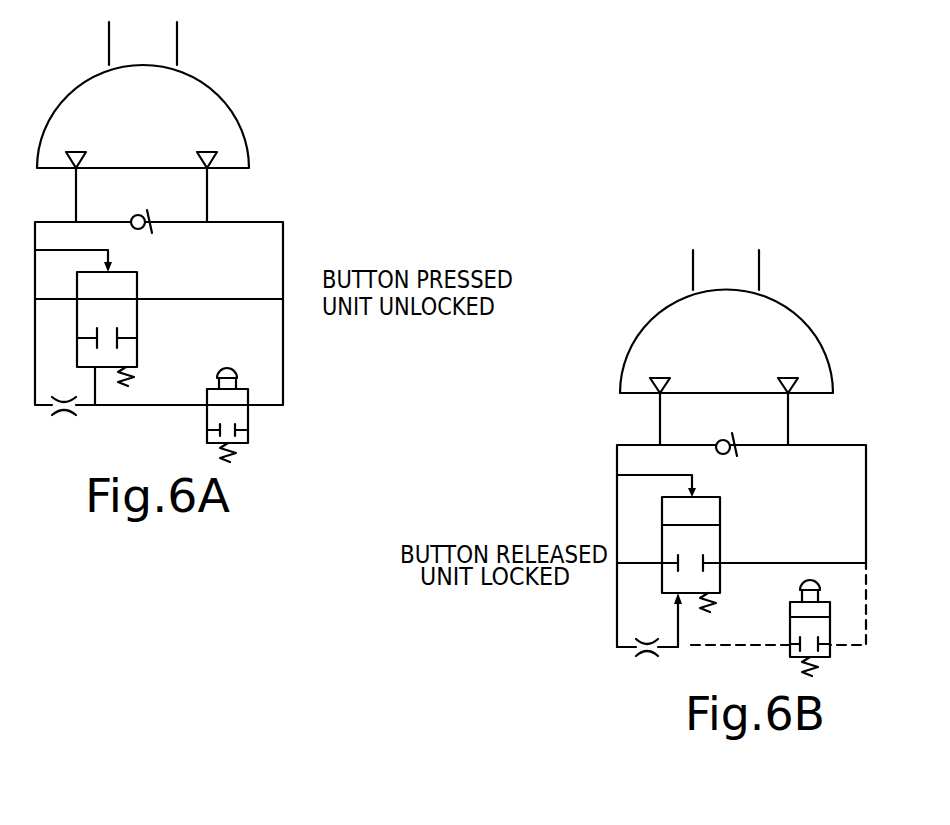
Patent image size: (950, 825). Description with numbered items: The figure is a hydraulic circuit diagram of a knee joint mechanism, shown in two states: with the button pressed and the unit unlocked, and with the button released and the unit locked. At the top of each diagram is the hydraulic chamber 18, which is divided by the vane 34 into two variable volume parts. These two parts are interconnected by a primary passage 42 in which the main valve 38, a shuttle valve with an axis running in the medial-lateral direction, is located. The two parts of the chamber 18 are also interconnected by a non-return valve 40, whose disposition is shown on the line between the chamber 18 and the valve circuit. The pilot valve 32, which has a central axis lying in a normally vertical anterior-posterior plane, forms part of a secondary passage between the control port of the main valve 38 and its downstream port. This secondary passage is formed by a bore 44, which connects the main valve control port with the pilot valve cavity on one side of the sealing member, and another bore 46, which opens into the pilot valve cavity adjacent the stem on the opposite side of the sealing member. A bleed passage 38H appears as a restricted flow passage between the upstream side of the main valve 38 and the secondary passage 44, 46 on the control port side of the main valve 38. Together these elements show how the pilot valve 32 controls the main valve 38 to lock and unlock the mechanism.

In FIG. 6A, the vane 34 is at (191, 95).
In FIG. 6B, the vane 34 is at (748, 313).
In FIG. 6A, the hydraulic chamber 18 is at (241, 93).
In FIG. 6B, the hydraulic chamber 18 is at (805, 308).
In FIG. 6A, the non-return valve 40 is at (154, 213).
In FIG. 6B, the non-return valve 40 is at (736, 433).
In FIG. 6A, the main valve 38 is at (120, 320).
In FIG. 6B, the main valve 38 is at (706, 566).
In FIG. 6A, the bleed passage 38H is at (67, 421).
In FIG. 6B, the bleed passage 38H is at (653, 662).
In FIG. 6A, the primary passage 42 is at (219, 299).
In FIG. 6B, the primary passage 42 is at (783, 560).
In FIG. 6A, the bore 44 is at (128, 407).
In FIG. 6A, the bore 46 is at (283, 362).
In FIG. 6A, the pilot valve 32 is at (213, 415).
In FIG. 6B, the pilot valve 32 is at (795, 631).